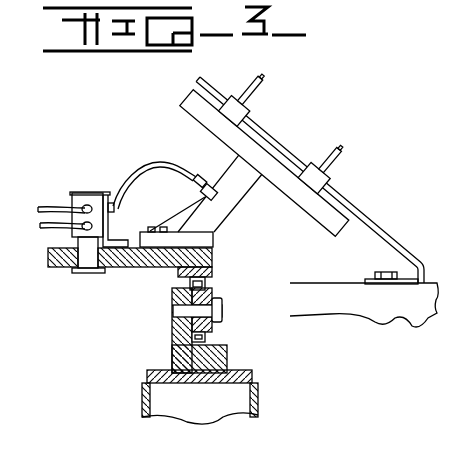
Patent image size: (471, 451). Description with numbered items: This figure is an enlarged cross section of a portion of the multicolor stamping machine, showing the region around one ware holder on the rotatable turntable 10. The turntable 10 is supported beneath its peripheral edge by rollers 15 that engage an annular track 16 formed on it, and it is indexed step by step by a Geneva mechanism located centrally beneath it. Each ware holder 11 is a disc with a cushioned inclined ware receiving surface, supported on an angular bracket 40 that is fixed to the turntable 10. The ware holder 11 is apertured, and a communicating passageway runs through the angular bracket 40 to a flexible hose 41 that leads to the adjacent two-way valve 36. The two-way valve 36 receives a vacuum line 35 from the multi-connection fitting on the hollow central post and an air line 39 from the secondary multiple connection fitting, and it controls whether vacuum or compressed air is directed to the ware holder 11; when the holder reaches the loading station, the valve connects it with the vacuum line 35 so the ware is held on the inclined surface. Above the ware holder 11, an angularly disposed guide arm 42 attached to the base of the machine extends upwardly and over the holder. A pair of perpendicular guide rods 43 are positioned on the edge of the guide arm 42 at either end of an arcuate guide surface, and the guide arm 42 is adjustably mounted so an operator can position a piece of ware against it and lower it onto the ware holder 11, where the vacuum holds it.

The turntable 10 is at (120, 267).
The ware holder 11 is at (184, 102).
The roller 15 is at (213, 333).
The annular track 16 is at (213, 272).
The vacuum line 35 is at (43, 229).
The two-way valve 36 is at (86, 204).
The air line 39 is at (60, 208).
The angular bracket 40 is at (241, 200).
The flexible hose 41 is at (163, 165).
The guide arm 42 is at (377, 226).
The guide rod 43 is at (257, 95).